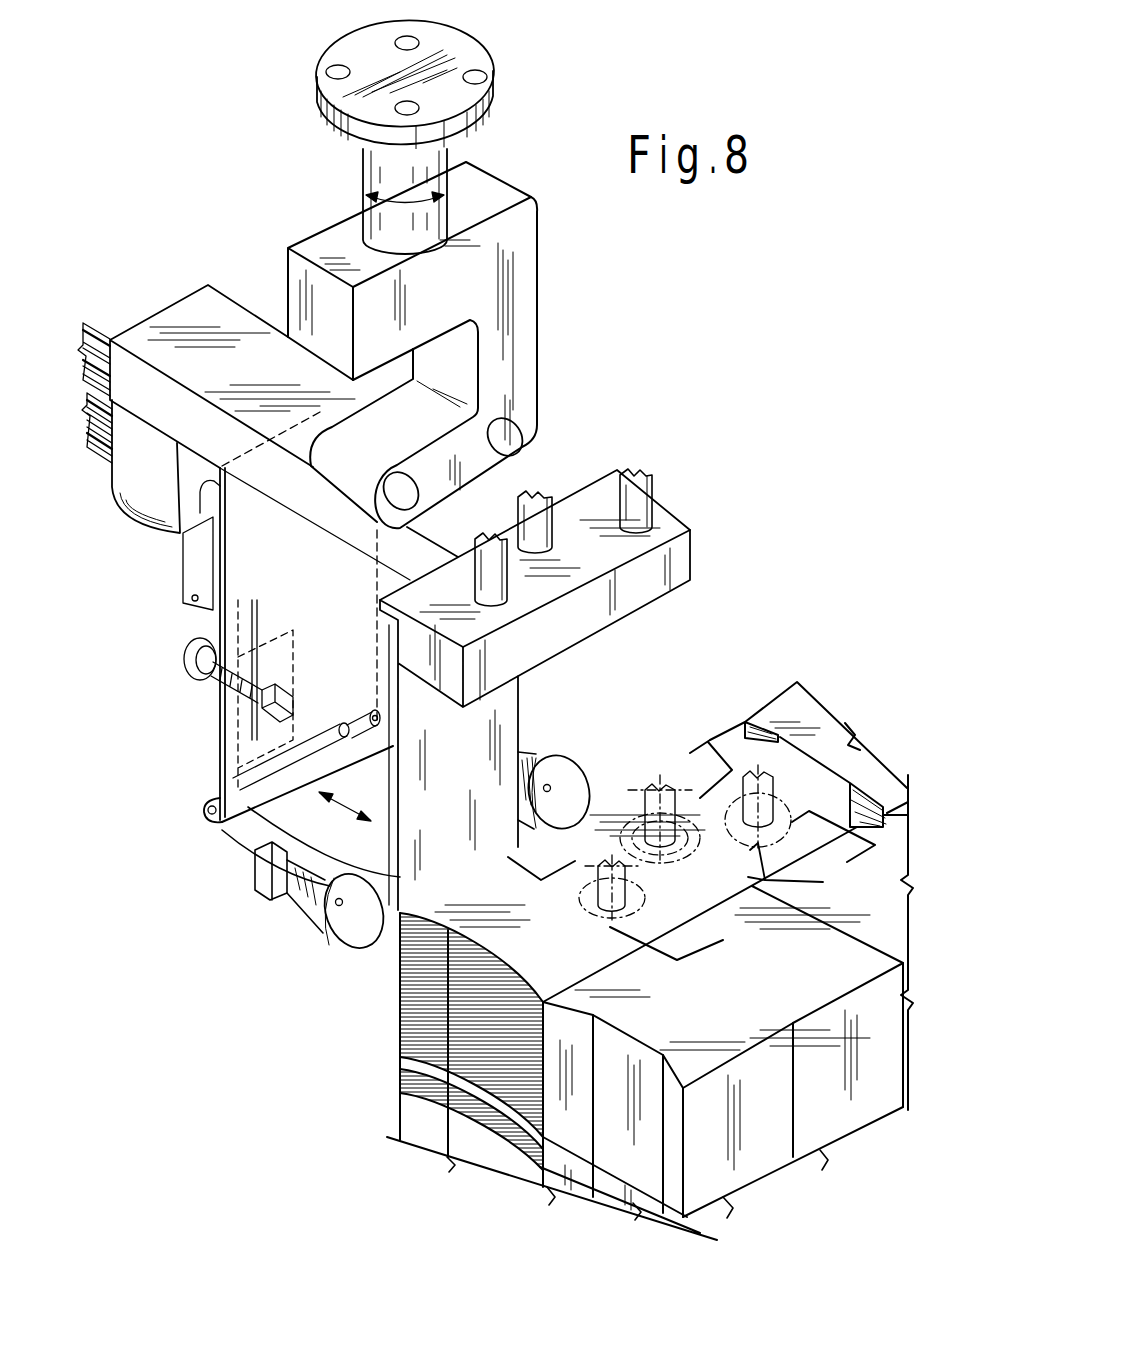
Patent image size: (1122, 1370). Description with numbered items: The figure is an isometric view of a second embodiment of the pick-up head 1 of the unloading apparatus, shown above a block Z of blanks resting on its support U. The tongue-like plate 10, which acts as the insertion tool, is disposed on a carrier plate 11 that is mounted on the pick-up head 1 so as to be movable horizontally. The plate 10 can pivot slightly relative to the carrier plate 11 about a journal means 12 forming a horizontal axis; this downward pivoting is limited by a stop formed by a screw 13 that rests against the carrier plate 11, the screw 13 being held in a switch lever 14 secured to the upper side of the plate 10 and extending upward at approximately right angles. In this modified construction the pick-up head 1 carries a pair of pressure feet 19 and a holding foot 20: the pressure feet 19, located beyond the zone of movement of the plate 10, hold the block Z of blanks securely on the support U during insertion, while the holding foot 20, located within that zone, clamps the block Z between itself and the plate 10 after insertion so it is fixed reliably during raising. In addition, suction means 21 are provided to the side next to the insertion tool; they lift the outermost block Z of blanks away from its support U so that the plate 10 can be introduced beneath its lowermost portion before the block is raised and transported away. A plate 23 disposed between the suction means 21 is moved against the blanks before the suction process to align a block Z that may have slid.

The pick-up head 1 is at (497, 490).
The plate 10 is at (293, 812).
The carrier plate 11 is at (227, 715).
The journal means 12 is at (207, 815).
The screw 13 is at (185, 675).
The switch lever 14 is at (210, 755).
The pressure foot 19 is at (640, 496).
The holding foot 20 is at (557, 500).
The suction means 21 is at (342, 935).
The plate 23 is at (503, 718).
The block of blanks Z is at (650, 961).
The support U is at (488, 1097).